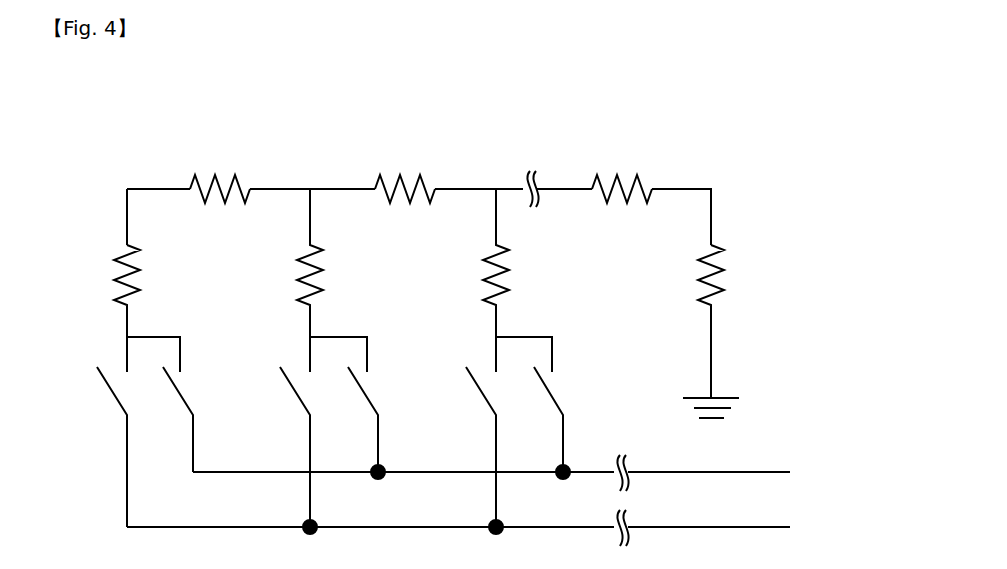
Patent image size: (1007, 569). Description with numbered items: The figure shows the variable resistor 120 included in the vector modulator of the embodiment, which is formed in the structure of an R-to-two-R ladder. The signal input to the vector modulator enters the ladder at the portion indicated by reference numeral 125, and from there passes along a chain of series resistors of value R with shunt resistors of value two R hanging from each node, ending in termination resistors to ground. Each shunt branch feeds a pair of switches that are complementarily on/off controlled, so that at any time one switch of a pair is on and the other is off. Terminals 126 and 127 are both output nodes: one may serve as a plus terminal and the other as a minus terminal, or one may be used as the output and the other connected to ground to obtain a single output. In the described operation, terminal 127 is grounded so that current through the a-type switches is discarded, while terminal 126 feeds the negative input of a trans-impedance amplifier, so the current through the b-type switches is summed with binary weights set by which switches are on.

The variable resistor 120 is at (717, 160).
The input portion 125 is at (127, 189).
The terminal 126 is at (510, 473).
The terminal 127 is at (477, 528).